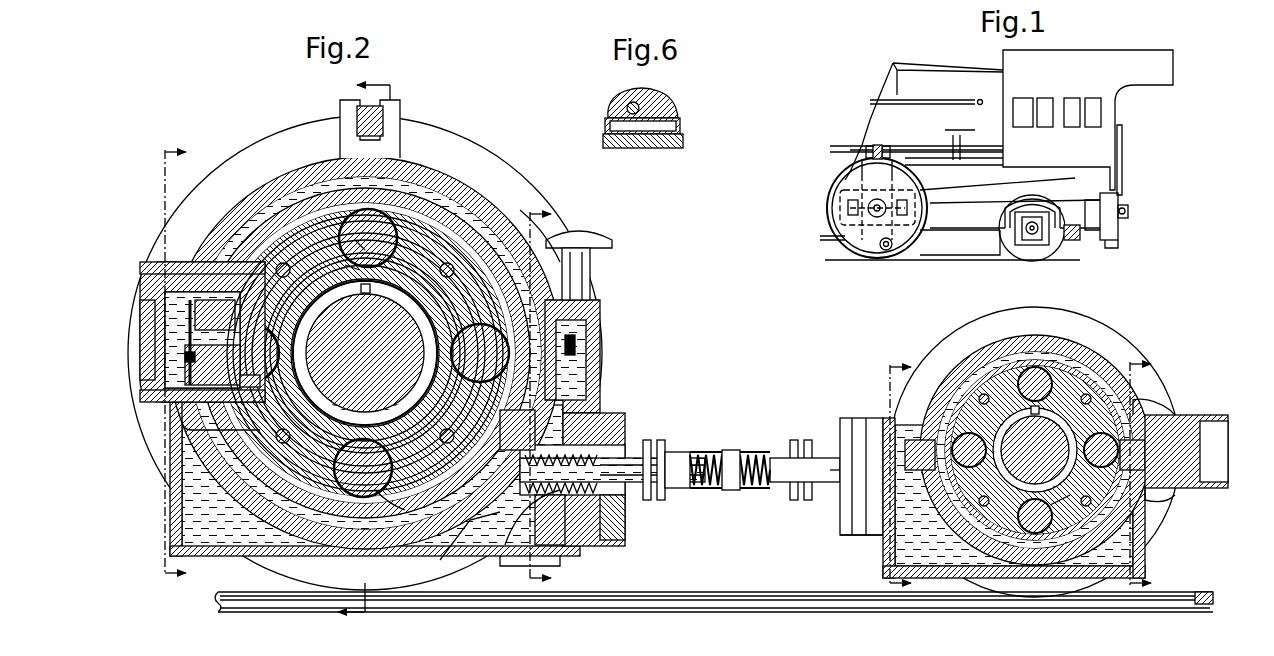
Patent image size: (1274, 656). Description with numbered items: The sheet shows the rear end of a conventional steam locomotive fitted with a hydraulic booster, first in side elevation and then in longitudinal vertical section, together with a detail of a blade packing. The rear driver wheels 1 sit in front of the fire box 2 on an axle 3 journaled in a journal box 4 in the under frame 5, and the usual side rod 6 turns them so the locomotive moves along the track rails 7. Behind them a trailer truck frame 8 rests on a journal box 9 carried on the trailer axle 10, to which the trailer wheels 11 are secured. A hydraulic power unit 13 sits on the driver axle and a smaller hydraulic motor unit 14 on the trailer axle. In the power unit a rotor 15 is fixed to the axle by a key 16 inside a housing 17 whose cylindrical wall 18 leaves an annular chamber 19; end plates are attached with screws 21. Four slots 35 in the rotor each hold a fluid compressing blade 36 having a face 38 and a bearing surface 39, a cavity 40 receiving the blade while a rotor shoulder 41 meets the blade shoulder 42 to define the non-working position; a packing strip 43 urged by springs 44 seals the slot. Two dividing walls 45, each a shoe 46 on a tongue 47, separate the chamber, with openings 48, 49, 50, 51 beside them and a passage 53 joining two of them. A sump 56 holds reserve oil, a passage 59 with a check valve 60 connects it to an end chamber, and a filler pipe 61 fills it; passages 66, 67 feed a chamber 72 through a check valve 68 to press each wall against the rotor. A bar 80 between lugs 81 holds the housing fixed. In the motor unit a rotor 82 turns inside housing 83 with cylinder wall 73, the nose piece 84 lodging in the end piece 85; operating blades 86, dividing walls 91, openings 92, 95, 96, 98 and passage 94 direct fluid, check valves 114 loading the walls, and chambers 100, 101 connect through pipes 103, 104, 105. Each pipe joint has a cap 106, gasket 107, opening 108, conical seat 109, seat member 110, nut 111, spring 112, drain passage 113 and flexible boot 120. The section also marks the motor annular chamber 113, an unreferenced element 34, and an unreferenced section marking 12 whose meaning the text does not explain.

In FIG. 2, the rear driver wheels 1 is at (250, 150).
In FIG. 1, the rear driver wheels 1 is at (828, 205).
In FIG. 1, the fire box 2 is at (960, 185).
In FIG. 2, the axle 3 is at (164, 358).
In FIG. 1, the axle 3 is at (872, 215).
In FIG. 2, the journal box 4 is at (518, 394).
In FIG. 1, the journal box 4 is at (880, 250).
In FIG. 2, the under frame 5 is at (364, 341).
In FIG. 1, the under frame 5 is at (838, 190).
In FIG. 2, the side rod 6 is at (352, 259).
In FIG. 1, the side rod 6 is at (820, 238).
In FIG. 1, the track rails 7 is at (950, 235).
In FIG. 1, the trailer truck frame 8 is at (970, 245).
In FIG. 1, the journal box 9 is at (1036, 240).
In FIG. 2, the trailer axle 10 is at (1062, 507).
In FIG. 1, the trailer axle 10 is at (1022, 245).
In FIG. 2, the trailer wheels 11 is at (1145, 535).
In FIG. 1, the trailer wheels 11 is at (1025, 238).
In FIG. 2, the section line 12 is at (886, 473).
In FIG. 2, the hydraulic power unit 13 is at (332, 168).
In FIG. 2, the hydraulic motor unit 14 is at (975, 345).
In FIG. 2, the rotor 15 is at (365, 353).
In FIG. 6, the rotor 15 is at (642, 140).
In FIG. 2, the key 16 is at (378, 307).
In FIG. 2, the housing 17 is at (405, 190).
In FIG. 2, the cylindrical wall 18 is at (430, 200).
In FIG. 2, the annular chamber 19 is at (455, 210).
In FIG. 2, the screws 21 is at (362, 357).
In FIG. 2, the arc member 34 is at (388, 505).
In FIG. 2, the slots 35 is at (365, 353).
In FIG. 2, the fluid compressing blade 36 is at (362, 353).
In FIG. 6, the fluid compressing blade 36 is at (670, 104).
In FIG. 2, the face 38 is at (369, 331).
In FIG. 2, the bearing surface 39 is at (367, 340).
In FIG. 2, the cavity 40 is at (365, 358).
In FIG. 2, the shoulder 41 is at (366, 358).
In FIG. 2, the shoulder 42 is at (366, 353).
In FIG. 2, the packing strip 43 is at (370, 354).
In FIG. 6, the packing strip 43 is at (605, 127).
In FIG. 6, the springs 44 is at (622, 104).
In FIG. 2, the dividing walls 45 is at (365, 352).
In FIG. 2, the shoe 46 is at (248, 393).
In FIG. 2, the tongue 47 is at (212, 342).
In FIG. 2, the opening 48 is at (215, 323).
In FIG. 2, the opening 49 is at (221, 423).
In FIG. 2, the opening 50 is at (595, 405).
In FIG. 2, the opening 51 is at (585, 300).
In FIG. 2, the passage 53 is at (530, 215).
In FIG. 2, the sump 56 is at (200, 460).
In FIG. 2, the passage 59 is at (470, 544).
In FIG. 2, the check valve 60 is at (520, 545).
In FIG. 2, the filler pipe 61 is at (590, 265).
In FIG. 2, the passage 66 is at (150, 300).
In FIG. 2, the passage 67 is at (165, 385).
In FIG. 2, the check valve 68 is at (165, 355).
In FIG. 2, the chamber 72 is at (160, 330).
In FIG. 2, the cylinder wall 73 is at (1115, 362).
In FIG. 2, the bar 80 is at (345, 112).
In FIG. 1, the bar 80 is at (862, 150).
In FIG. 2, the lugs 81 is at (355, 105).
In FIG. 1, the lugs 81 is at (880, 146).
In FIG. 2, the rotor 82 is at (1035, 450).
In FIG. 2, the housing 83 is at (1085, 340).
In FIG. 2, the nose piece 84 is at (1228, 455).
In FIG. 2, the end piece 85 is at (1205, 414).
In FIG. 1, the end piece 85 is at (1080, 240).
In FIG. 2, the operating blades 86 is at (1035, 450).
In FIG. 2, the dividing walls 91 is at (1027, 450).
In FIG. 2, the opening 92 is at (890, 425).
In FIG. 2, the passage 94 is at (1010, 352).
In FIG. 2, the opening 95 is at (1160, 498).
In FIG. 2, the opening 96 is at (880, 535).
In FIG. 2, the opening 98 is at (1065, 424).
In FIG. 2, the chamber 100 is at (845, 440).
In FIG. 2, the chamber 101 is at (955, 575).
In FIG. 2, the pipe 103 is at (730, 450).
In FIG. 2, the pipe 104 is at (708, 450).
In FIG. 2, the pipe 105 is at (690, 455).
In FIG. 2, the cap 106 is at (630, 420).
In FIG. 2, the gasket 107 is at (600, 520).
In FIG. 2, the opening 108 is at (612, 470).
In FIG. 2, the conical seat 109 is at (622, 505).
In FIG. 2, the seat member 110 is at (620, 425).
In FIG. 2, the nut 111 is at (548, 571).
In FIG. 2, the spring 112 is at (570, 506).
In FIG. 2, the passage 113 is at (625, 520).
In FIG. 2, the check valves 114 is at (905, 450).
In FIG. 2, the flexible boot 120 is at (665, 492).